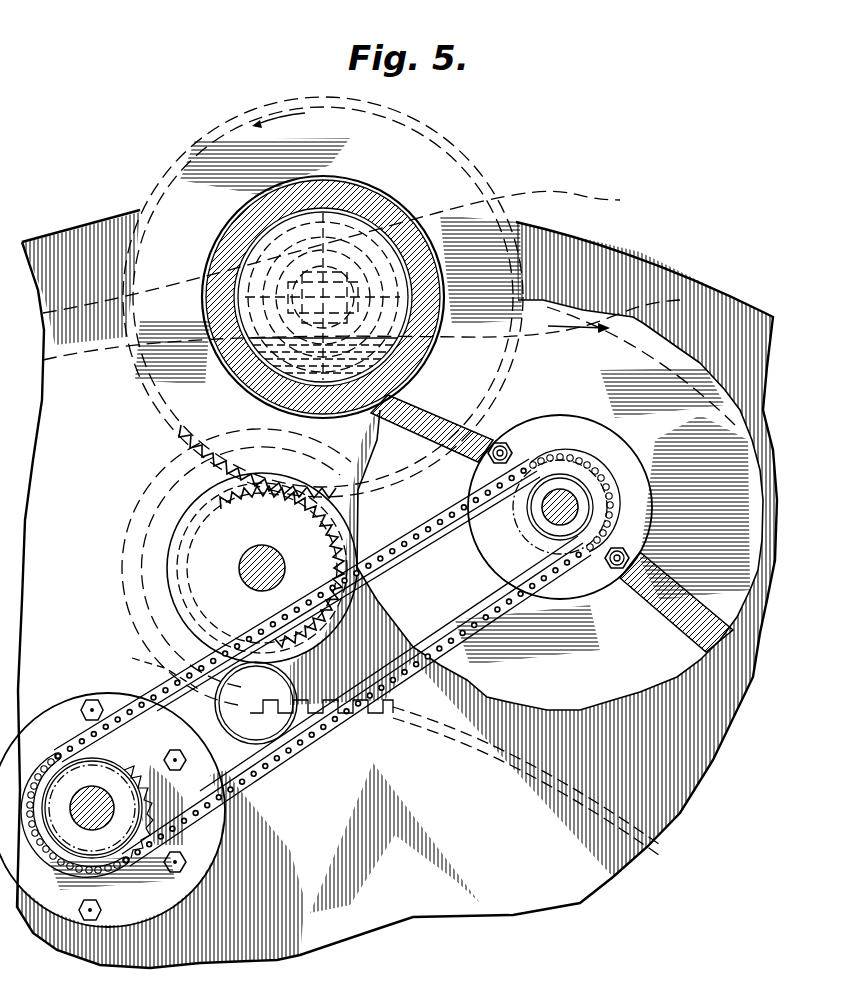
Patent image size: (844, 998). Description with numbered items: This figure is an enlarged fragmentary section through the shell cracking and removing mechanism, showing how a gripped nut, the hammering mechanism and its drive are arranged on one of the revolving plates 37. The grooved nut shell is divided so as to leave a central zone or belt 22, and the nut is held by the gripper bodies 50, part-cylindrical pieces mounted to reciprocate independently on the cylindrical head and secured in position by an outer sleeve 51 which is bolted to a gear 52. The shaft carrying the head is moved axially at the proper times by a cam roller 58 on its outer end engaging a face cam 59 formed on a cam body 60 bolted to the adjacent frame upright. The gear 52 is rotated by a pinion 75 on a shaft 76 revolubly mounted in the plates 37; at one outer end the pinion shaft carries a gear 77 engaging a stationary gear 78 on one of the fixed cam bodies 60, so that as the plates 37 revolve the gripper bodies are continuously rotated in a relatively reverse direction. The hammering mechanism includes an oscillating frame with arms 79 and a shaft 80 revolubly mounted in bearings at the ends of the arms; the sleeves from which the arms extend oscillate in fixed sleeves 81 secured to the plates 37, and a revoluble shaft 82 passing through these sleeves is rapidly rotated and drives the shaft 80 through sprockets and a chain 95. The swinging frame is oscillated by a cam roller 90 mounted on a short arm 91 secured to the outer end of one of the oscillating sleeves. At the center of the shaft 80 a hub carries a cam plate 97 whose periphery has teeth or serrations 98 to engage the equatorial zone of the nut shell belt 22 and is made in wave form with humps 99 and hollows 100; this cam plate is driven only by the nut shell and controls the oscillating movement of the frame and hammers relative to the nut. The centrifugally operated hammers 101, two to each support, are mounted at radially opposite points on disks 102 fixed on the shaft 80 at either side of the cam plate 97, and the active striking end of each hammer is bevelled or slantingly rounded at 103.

The central zone or belt 22 is at (375, 208).
The plate 37 is at (533, 855).
The gripper body 50 is at (408, 272).
The outer sleeve 51 is at (337, 180).
The gear 52 is at (190, 437).
The cam roller 58 is at (232, 263).
The face cam 59 is at (78, 318).
The cam body 60 is at (108, 300).
The pinion 75 is at (222, 497).
The pinion shaft 76 is at (254, 556).
The gear 77 is at (152, 667).
The stationary gear 78 is at (380, 712).
The arm 79 is at (413, 668).
The shaft 80 is at (562, 492).
The fixed sleeve 81 is at (78, 872).
The revoluble shaft 82 is at (100, 810).
The cam roller 90 is at (297, 727).
The short arm 91 is at (260, 773).
The chain 95 is at (296, 735).
The cam plate 97 is at (396, 450).
The teeth or serrations 98 is at (660, 322).
The hump 99 is at (649, 322).
The hollow 100 is at (697, 358).
The centrifugally operated hammer 101 is at (450, 432).
The disk 102 is at (617, 453).
The bevelled end 103 is at (378, 412).